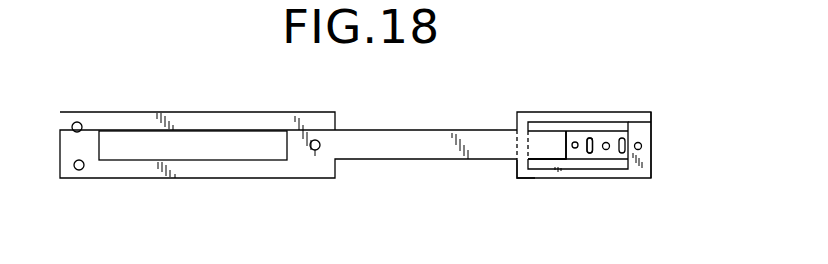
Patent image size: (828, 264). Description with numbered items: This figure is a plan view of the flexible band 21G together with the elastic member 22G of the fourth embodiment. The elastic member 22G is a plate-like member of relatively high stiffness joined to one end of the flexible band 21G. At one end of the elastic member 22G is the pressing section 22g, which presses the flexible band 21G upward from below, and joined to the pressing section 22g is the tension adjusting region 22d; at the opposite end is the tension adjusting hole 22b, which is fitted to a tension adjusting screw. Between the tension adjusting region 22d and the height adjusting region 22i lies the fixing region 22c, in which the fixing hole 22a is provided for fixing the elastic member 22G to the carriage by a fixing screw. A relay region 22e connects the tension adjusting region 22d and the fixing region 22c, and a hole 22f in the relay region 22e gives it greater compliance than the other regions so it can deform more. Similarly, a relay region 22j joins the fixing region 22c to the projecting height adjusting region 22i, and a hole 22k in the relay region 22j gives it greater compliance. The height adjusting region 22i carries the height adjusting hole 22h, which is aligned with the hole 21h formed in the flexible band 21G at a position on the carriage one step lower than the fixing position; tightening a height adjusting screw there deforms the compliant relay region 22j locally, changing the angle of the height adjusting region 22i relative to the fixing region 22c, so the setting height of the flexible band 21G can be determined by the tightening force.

The flexible band 21G is at (267, 178).
The elastic member 22G is at (581, 108).
The pressing section 22g is at (514, 171).
The tension adjusting region 22d is at (643, 121).
The relay region 22e is at (628, 122).
The height adjusting region 22i is at (572, 133).
The hole 22k is at (590, 137).
The relay region 22j is at (590, 154).
The fixing hole 22a is at (607, 150).
The fixing region 22c is at (623, 155).
The tension adjusting hole 22b is at (642, 146).
The hole 22f is at (645, 163).
The hole 21h is at (565, 160).
The height adjusting hole 22h is at (565, 160).